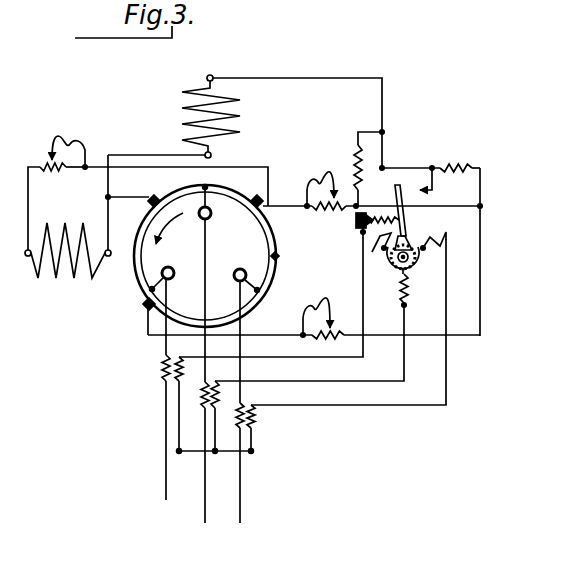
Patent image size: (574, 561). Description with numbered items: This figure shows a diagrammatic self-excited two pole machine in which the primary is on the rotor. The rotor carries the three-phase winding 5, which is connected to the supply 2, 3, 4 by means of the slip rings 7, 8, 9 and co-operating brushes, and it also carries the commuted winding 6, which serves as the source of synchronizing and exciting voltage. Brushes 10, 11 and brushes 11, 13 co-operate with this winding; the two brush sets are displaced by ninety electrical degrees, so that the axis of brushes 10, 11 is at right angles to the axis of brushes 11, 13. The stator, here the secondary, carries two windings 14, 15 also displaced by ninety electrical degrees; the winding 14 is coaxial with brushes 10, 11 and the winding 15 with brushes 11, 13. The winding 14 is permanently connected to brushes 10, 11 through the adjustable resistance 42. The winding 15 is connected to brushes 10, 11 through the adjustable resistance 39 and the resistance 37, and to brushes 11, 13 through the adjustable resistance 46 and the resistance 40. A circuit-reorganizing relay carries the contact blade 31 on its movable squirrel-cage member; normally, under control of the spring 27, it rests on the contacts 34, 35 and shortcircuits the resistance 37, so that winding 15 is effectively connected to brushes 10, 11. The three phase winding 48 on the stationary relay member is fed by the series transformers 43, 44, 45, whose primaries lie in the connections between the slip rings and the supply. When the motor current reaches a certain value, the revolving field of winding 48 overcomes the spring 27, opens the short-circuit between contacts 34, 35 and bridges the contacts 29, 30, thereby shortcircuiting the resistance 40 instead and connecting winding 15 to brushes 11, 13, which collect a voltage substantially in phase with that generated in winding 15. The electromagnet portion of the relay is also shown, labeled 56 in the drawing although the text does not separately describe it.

The supply 2 is at (161, 401).
The supply 3 is at (198, 380).
The supply 4 is at (232, 411).
The three-phase winding 5 is at (276, 256).
The commuted winding 6 is at (136, 283).
The slip ring 7 is at (170, 273).
The slip ring 8 is at (213, 205).
The slip ring 9 is at (236, 279).
The brush 10 is at (251, 193).
The brush 11 is at (151, 193).
The brush 13 is at (138, 313).
The winding 14 is at (68, 262).
The winding 15 is at (195, 116).
The spring 27 is at (364, 212).
The contact 29 is at (418, 208).
The contact 30 is at (421, 185).
The contact blade 31 is at (406, 219).
The contact 34 is at (384, 207).
The contact 35 is at (391, 183).
The resistance 37 is at (352, 148).
The adjustable resistance 39 is at (322, 202).
The resistance 40 is at (456, 158).
The adjustable resistance 42 is at (53, 152).
The series transformer 43 is at (154, 368).
The series transformer 44 is at (196, 400).
The series transformer 45 is at (261, 418).
The adjustable resistance 46 is at (323, 328).
The three phase winding 48 is at (378, 233).
The electromagnet 56 is at (412, 267).